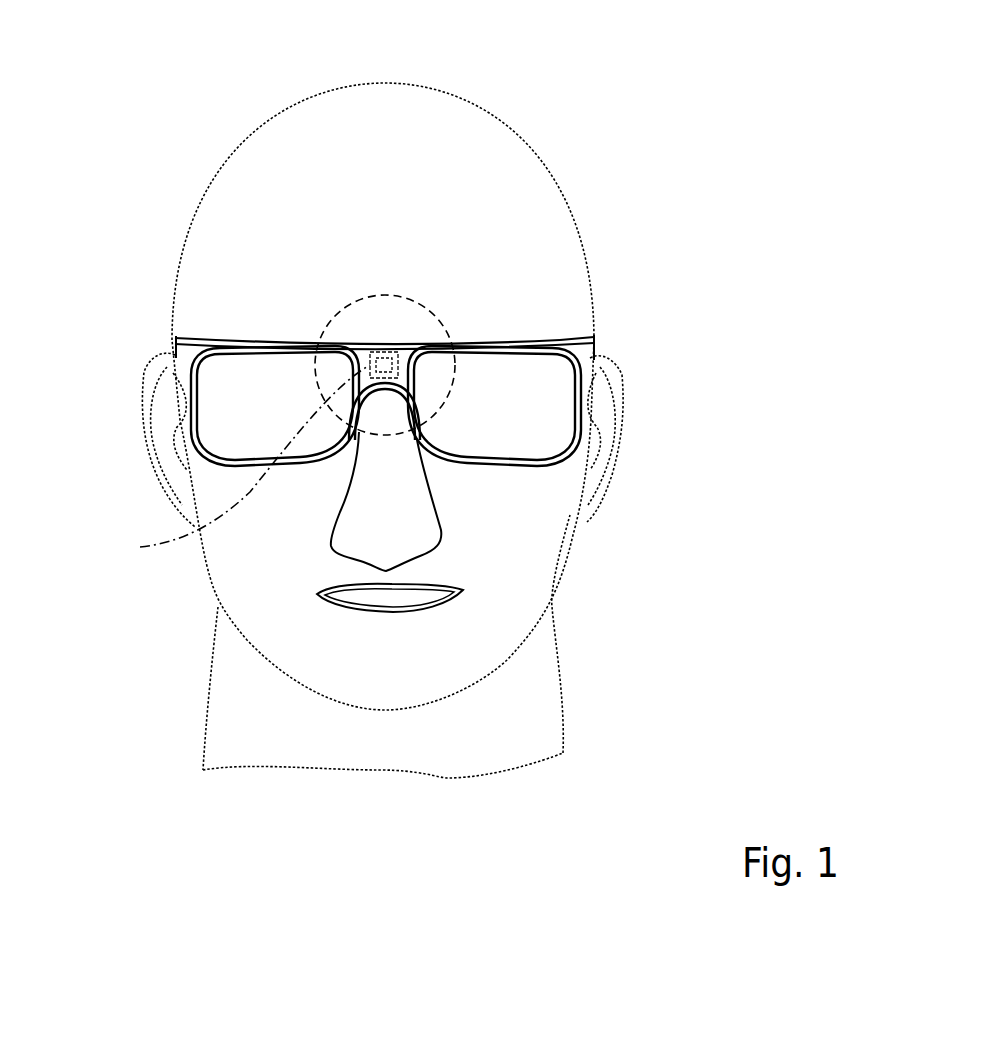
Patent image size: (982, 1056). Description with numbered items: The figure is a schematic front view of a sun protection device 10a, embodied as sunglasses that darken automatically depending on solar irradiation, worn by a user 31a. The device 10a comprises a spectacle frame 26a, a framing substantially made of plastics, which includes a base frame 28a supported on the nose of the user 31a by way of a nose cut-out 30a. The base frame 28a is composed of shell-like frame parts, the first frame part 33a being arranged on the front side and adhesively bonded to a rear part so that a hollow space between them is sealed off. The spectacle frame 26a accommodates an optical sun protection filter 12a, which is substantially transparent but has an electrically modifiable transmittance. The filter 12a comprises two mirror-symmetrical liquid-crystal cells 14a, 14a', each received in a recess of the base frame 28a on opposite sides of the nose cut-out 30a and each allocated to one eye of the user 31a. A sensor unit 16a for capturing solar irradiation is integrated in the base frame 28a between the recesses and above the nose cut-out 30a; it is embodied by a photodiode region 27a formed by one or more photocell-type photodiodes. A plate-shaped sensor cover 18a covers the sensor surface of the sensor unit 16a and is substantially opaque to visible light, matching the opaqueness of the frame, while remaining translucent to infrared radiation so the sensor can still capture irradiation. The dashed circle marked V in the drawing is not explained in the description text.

The sun protection device 10a is at (489, 326).
The optical sun protection filter 12a is at (236, 331).
The liquid-crystal cell 14a is at (196, 406).
The liquid-crystal cell 14a' is at (563, 406).
The sensor unit 16a is at (360, 357).
The sensor cover 18a is at (226, 465).
The spectacle frame 26a is at (559, 326).
The photodiode region 27a is at (381, 350).
The base frame 28a is at (522, 456).
The nose cut-out 30a is at (392, 420).
The user 31a is at (421, 147).
The first frame part 33a is at (583, 352).
The reference point V is at (401, 297).